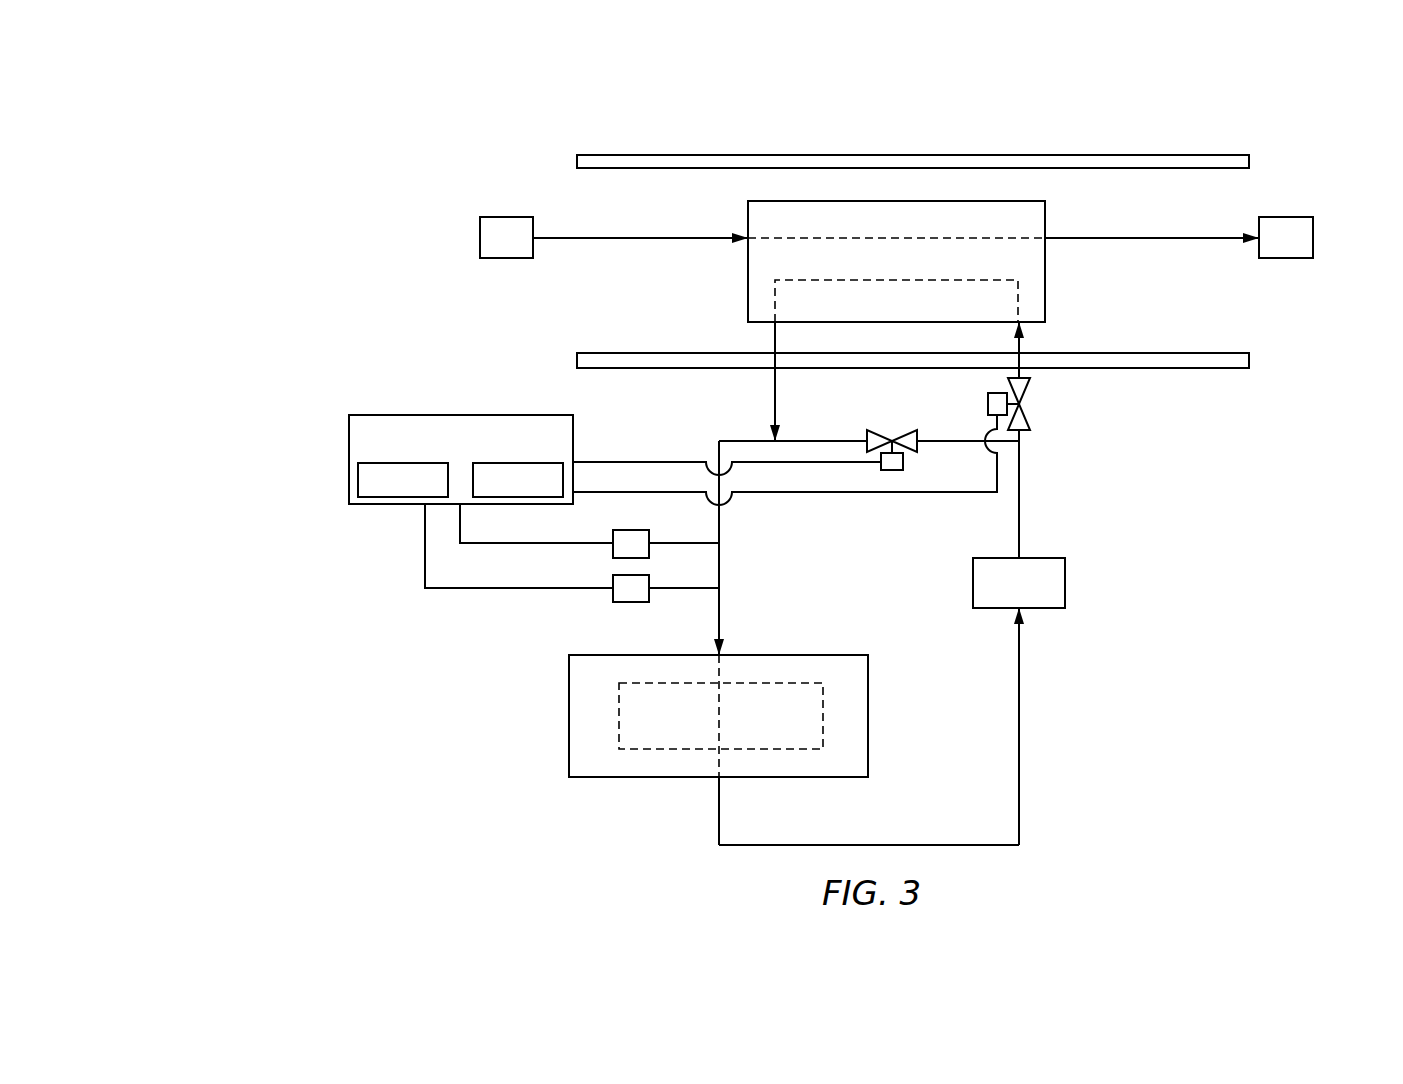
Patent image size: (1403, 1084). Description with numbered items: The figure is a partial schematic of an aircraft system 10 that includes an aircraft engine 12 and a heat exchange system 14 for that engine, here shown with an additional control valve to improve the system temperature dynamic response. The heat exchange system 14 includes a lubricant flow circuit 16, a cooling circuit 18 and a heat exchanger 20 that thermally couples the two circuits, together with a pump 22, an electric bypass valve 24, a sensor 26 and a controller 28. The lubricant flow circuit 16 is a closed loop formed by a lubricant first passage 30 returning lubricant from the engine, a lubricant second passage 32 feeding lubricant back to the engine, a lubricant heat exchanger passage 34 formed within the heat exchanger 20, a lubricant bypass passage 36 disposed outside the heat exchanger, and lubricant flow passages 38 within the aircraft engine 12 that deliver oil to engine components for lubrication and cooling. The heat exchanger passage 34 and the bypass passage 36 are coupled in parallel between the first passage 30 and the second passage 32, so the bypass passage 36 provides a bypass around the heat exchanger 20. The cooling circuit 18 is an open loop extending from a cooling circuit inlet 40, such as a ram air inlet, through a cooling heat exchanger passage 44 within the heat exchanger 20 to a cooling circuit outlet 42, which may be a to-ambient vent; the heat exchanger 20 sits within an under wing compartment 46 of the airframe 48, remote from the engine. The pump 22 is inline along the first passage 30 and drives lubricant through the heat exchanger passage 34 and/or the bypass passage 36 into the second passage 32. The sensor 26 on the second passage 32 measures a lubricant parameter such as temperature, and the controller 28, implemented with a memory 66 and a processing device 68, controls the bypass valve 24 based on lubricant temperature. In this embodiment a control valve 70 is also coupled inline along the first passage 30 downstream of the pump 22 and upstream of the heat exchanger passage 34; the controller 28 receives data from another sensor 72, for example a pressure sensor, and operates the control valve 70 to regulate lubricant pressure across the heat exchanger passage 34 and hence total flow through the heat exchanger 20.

The aircraft system 10 is at (323, 157).
The aircraft engine 12 is at (557, 755).
The heat exchange system 14 is at (1238, 492).
The lubricant flow circuit 16 is at (1060, 465).
The cooling circuit 18 is at (668, 215).
The heat exchanger 20 is at (1046, 284).
The pump 22 is at (1065, 575).
The electric bypass valve 24 is at (900, 423).
The sensor 26 is at (634, 530).
The controller 28 is at (423, 458).
The lubricant first passage 30 is at (1021, 707).
The lubricant second passage 32 is at (722, 620).
The lubricant heat exchanger passage 34 is at (875, 282).
The lubricant bypass passage 36 is at (968, 443).
The lubricant flow passages 38 is at (667, 749).
The cooling circuit inlet 40 is at (494, 249).
The cooling circuit outlet 42 is at (1274, 249).
The cooling heat exchanger passage 44 is at (875, 240).
The under wing compartment 46 is at (671, 308).
The airframe 48 is at (728, 147).
The memory 66 is at (391, 492).
The processing device 68 is at (506, 492).
The control valve 70 is at (1050, 408).
The sensor 72 is at (630, 602).